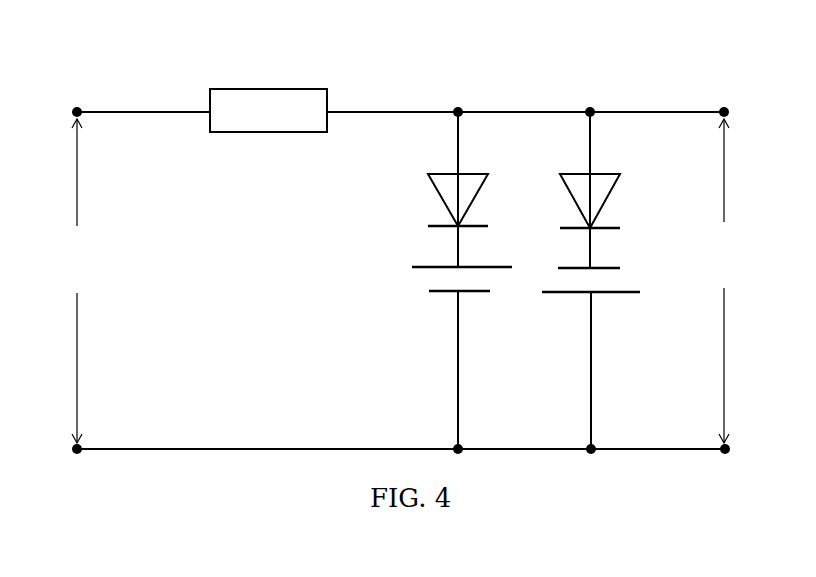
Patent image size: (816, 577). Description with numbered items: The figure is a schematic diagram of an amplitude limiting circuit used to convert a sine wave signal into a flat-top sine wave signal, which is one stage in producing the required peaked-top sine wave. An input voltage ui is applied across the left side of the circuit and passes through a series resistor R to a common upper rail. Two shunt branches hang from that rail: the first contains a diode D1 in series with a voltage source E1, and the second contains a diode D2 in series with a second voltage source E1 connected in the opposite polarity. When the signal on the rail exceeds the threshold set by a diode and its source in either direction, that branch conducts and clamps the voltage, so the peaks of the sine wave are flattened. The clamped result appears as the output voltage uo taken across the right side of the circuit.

The resistor R is at (268, 91).
The first diode D1 is at (444, 189).
The second diode D2 is at (575, 190).
The battery / voltage source E1 is at (521, 358).
The input voltage ui is at (79, 281).
The output voltage uo is at (724, 281).